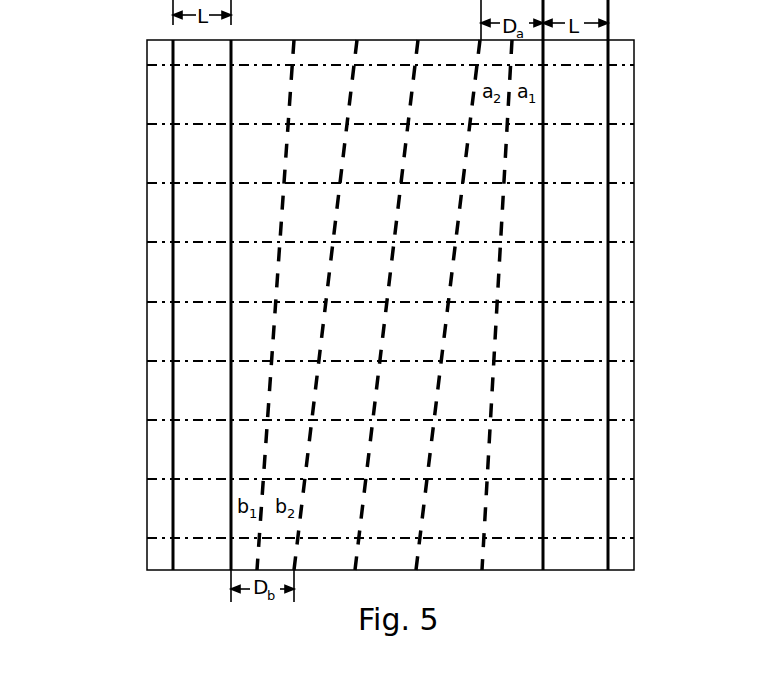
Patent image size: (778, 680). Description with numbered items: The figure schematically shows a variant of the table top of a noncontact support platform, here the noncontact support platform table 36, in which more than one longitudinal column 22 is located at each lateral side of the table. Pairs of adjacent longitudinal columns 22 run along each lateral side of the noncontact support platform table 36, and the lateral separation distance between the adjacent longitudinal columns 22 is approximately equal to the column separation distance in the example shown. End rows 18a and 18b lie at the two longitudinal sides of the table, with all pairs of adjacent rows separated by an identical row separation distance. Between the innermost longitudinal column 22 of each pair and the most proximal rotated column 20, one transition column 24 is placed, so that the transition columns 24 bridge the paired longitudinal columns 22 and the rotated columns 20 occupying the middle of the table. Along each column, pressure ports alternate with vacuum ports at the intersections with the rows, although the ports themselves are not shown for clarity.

The end row 18a is at (158, 65).
The end row 18b is at (162, 537).
The rotated column 20 is at (287, 149).
The longitudinal column 22 is at (230, 345).
The transition column 24 is at (266, 410).
The noncontact support platform table 36 is at (634, 480).